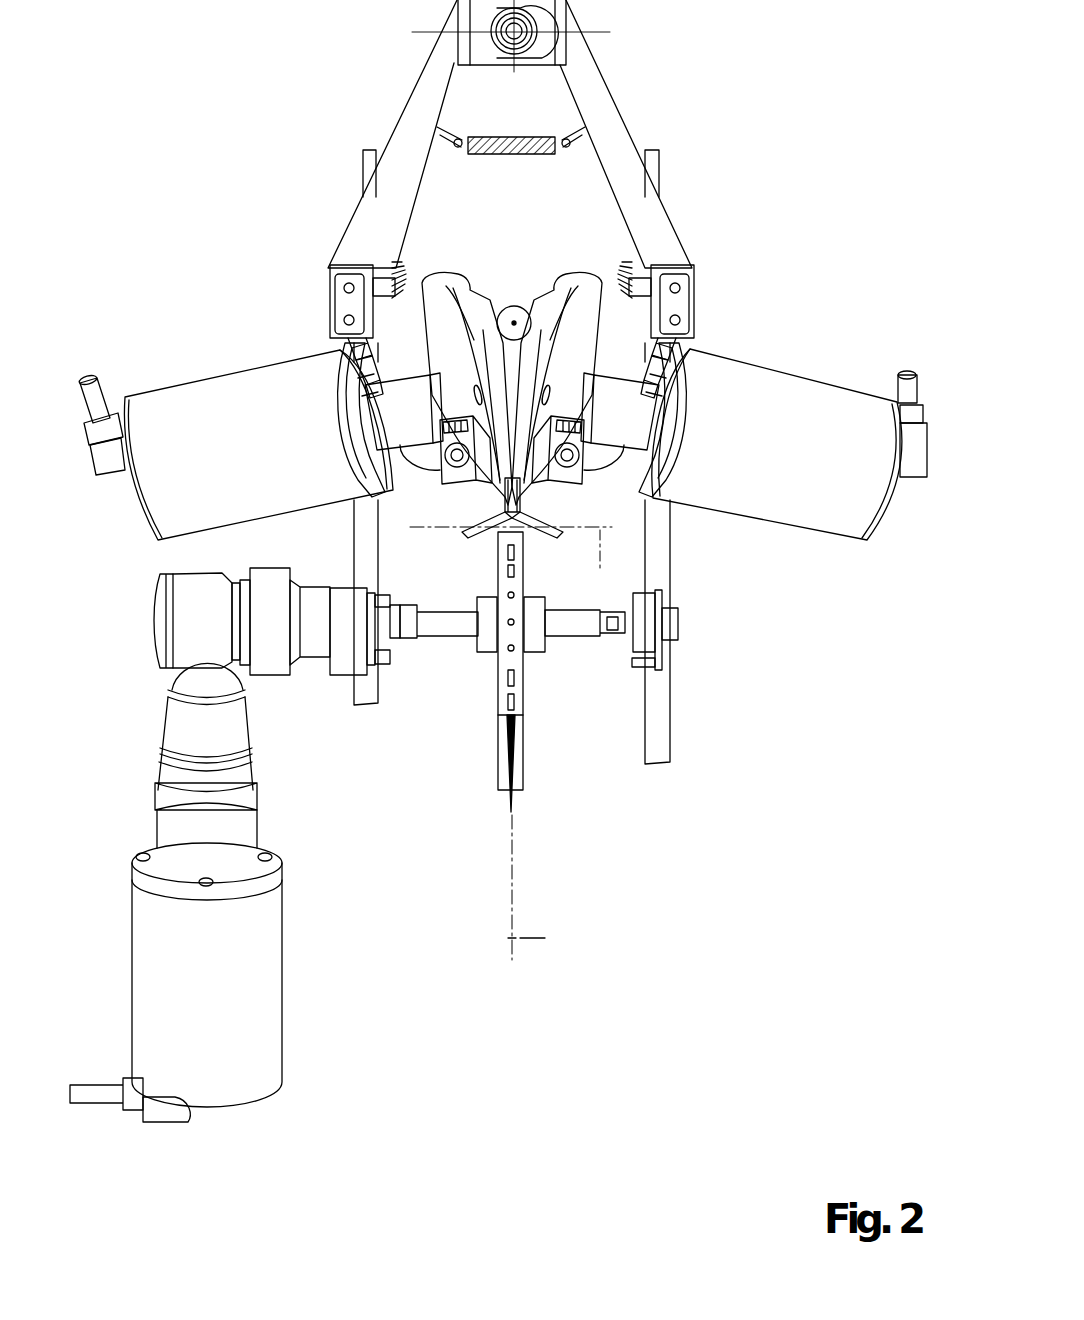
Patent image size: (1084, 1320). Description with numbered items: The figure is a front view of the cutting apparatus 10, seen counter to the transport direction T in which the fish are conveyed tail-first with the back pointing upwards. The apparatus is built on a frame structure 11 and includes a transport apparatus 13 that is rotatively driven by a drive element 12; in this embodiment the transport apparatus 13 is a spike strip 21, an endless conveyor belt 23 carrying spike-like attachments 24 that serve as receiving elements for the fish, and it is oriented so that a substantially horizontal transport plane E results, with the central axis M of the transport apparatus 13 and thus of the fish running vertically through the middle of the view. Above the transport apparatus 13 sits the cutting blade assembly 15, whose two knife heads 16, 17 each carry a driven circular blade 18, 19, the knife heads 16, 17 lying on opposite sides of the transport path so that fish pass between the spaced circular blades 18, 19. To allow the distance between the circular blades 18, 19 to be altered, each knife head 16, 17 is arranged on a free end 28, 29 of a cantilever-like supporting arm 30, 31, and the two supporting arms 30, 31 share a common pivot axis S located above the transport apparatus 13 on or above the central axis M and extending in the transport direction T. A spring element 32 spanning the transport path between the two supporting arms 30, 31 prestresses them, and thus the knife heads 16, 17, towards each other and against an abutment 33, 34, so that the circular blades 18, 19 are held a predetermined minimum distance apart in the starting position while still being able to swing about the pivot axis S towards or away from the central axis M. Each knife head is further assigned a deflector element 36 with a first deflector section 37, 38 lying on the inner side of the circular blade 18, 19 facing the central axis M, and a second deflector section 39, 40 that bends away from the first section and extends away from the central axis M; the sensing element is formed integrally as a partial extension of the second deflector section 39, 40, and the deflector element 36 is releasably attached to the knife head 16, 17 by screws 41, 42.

The cutting apparatus 10 is at (708, 127).
The frame structure 11 is at (358, 553).
The drive element 12 is at (180, 640).
The transport apparatus 13 is at (540, 812).
The cutting blade assembly 15 is at (488, 282).
The knife head 16 is at (308, 298).
The knife head 17 is at (706, 300).
The circular blade 18 is at (438, 285).
The circular blade 19 is at (580, 285).
The spike strip 21 is at (538, 705).
The endless conveyor belt 23 is at (518, 683).
The spike-like attachments 24 is at (508, 652).
The free end 28 is at (348, 340).
The free end 29 is at (676, 340).
The supporting arm 30 is at (424, 98).
The supporting arm 31 is at (598, 99).
The spring element 32 is at (525, 155).
The abutment 33 is at (394, 278).
The abutment 34 is at (630, 278).
The deflector element 36 is at (560, 498).
The first deflector section 37 is at (386, 473).
The first deflector section 38 is at (640, 473).
The second deflector section 39 is at (492, 521).
The second deflector section 40 is at (570, 513).
The screw 41 is at (445, 456).
The screw 42 is at (579, 456).
The transport direction T is at (514, 305).
The pivot axis S is at (506, 62).
The transport plane E is at (603, 562).
The central axis M is at (543, 887).